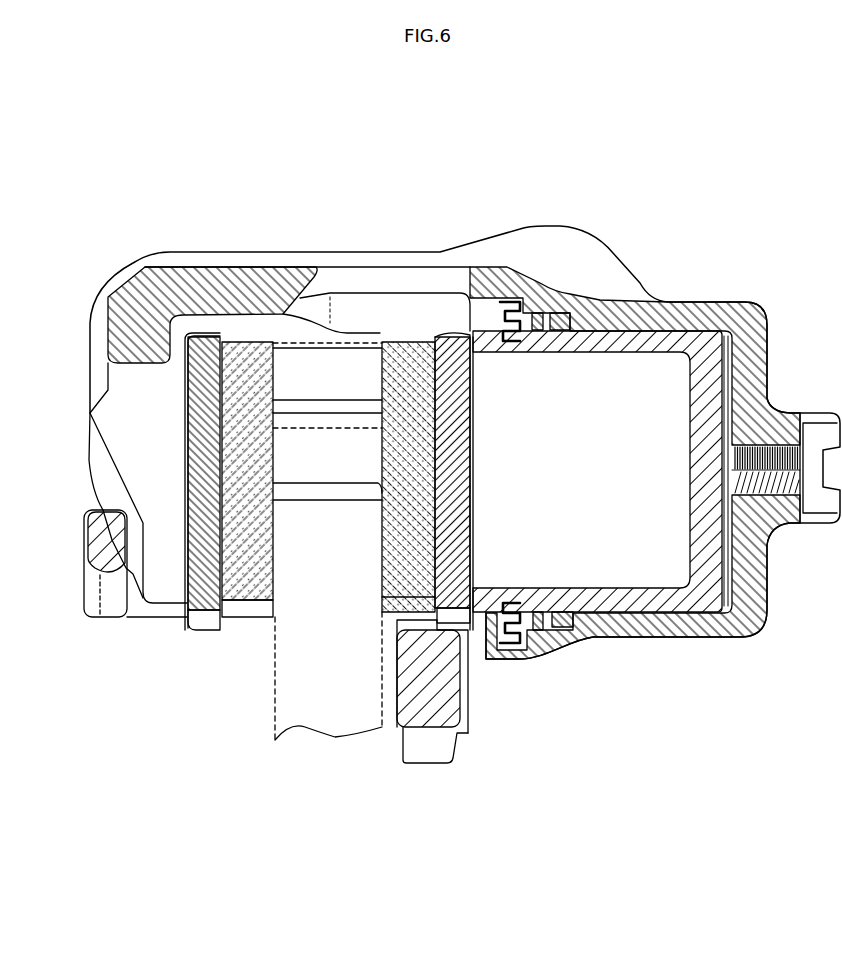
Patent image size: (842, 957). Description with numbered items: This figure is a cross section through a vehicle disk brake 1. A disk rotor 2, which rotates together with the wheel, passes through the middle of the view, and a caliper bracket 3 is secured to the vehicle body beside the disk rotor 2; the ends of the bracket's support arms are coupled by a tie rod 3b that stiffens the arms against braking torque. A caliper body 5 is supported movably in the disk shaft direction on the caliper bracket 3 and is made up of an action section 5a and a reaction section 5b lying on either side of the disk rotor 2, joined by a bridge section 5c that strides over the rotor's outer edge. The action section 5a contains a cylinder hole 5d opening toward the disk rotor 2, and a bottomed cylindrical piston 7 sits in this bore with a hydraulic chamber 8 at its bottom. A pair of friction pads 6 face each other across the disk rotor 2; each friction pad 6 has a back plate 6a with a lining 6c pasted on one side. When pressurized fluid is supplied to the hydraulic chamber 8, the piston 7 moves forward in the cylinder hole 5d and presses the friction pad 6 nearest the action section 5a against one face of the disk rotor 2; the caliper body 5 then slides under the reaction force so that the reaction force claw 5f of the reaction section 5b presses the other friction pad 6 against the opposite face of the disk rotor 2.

The disk brake 1 is at (451, 145).
The disk rotor 2 is at (335, 735).
The caliper bracket 3 is at (480, 693).
The tie rod 3b is at (97, 544).
The caliper body 5 is at (443, 417).
The action section 5a is at (757, 352).
The reaction section 5b is at (113, 329).
The bridge section 5c is at (277, 273).
The cylinder hole 5d is at (633, 637).
The reaction force claw 5f is at (160, 594).
The friction pad 6 is at (364, 514).
The back plate 6a is at (207, 604).
The lining 6c is at (257, 598).
The piston 7 is at (704, 451).
The hydraulic chamber 8 is at (727, 397).